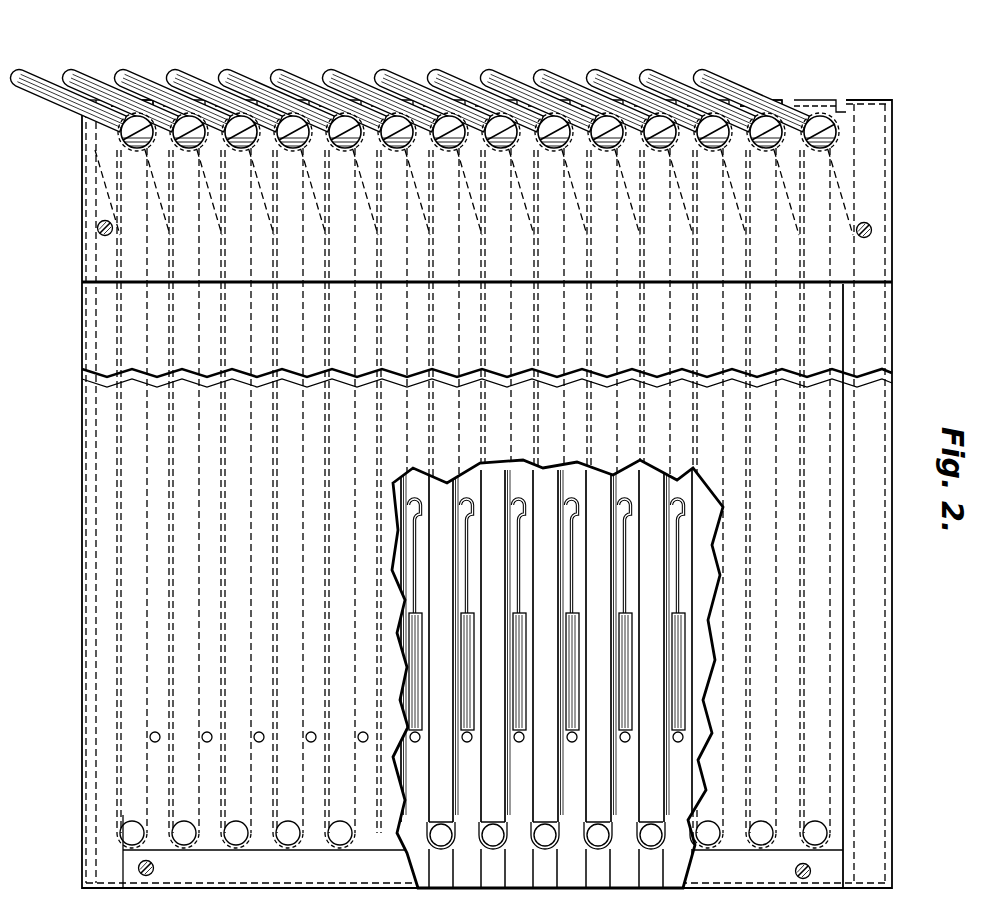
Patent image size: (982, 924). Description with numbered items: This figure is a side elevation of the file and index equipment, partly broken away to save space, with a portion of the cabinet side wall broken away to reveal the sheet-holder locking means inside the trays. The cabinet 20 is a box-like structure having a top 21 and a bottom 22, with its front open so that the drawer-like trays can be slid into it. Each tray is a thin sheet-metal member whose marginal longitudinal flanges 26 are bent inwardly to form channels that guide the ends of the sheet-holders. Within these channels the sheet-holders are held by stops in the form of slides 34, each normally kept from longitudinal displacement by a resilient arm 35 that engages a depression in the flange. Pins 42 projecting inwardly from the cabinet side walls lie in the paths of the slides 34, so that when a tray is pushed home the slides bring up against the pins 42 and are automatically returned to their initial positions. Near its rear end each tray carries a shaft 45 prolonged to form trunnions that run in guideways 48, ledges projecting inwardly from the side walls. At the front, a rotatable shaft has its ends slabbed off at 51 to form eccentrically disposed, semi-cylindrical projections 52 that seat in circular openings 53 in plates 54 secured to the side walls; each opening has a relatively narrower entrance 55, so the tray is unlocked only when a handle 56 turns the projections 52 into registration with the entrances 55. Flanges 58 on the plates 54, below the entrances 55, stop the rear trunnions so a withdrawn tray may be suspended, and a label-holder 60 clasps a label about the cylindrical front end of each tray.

The cabinet 20 is at (498, 493).
The top 21 is at (884, 570).
The bottom 22 is at (100, 494).
The marginal longitudinal flange 26 is at (455, 572).
The slide 34 is at (472, 665).
The resilient arm 35 is at (418, 528).
The pin 42 is at (207, 731).
The shaft 45 is at (184, 818).
The guideway 48 is at (172, 258).
The slabbed-off terminal portion 51 is at (239, 150).
The eccentrically disposed projection 52 is at (345, 150).
The opening 53 is at (520, 148).
The plate 54 is at (880, 206).
The entrance 55 is at (838, 114).
The handle 56 is at (508, 97).
The flange 58 is at (835, 104).
The label-holder 60 is at (130, 110).